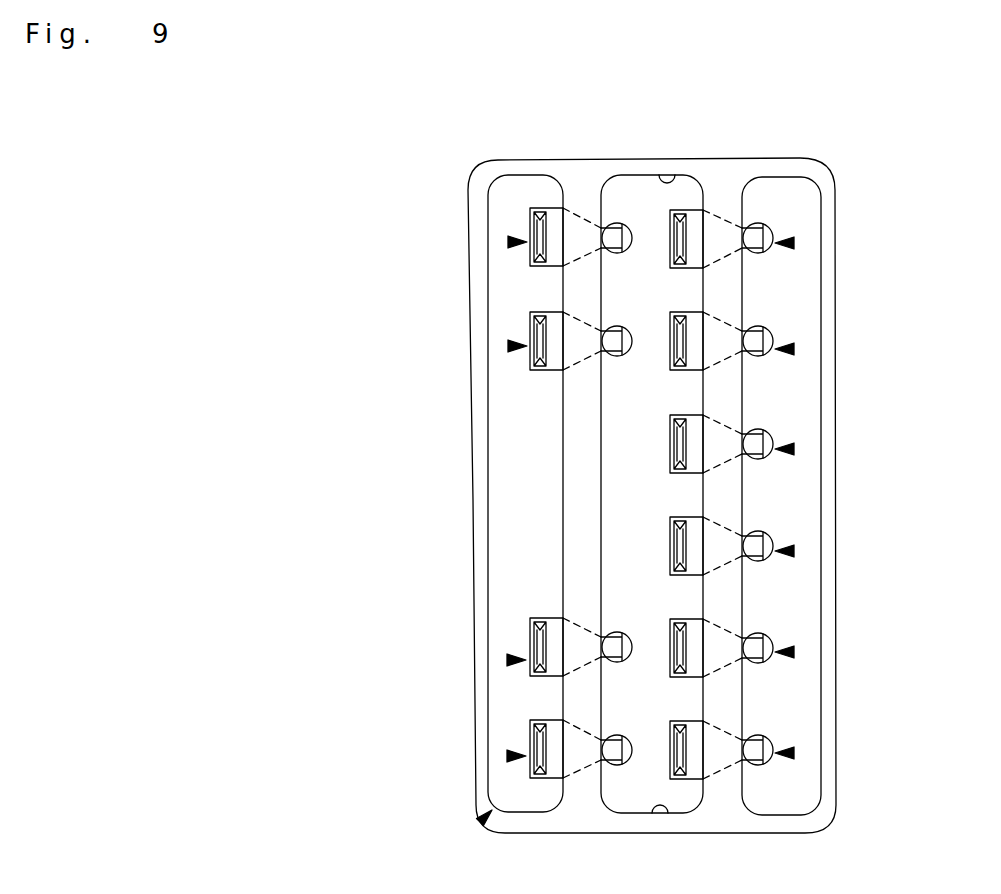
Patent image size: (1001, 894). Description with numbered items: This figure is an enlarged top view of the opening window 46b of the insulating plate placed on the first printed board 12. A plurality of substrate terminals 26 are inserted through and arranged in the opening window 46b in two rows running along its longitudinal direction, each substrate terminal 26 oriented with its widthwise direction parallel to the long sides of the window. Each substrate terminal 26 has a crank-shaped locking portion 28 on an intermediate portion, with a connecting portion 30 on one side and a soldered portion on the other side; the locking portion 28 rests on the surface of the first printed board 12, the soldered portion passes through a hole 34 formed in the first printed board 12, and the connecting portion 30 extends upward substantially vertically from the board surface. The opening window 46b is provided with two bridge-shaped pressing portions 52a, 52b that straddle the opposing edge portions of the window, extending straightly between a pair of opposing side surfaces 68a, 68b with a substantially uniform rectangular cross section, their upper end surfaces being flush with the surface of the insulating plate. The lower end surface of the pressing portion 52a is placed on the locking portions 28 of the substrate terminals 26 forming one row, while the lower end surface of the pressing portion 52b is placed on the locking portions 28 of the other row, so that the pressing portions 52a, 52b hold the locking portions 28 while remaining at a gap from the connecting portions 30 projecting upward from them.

The first printed board 12 is at (518, 490).
The substrate terminal 26 is at (508, 242).
The locking portion 28 is at (577, 235).
The connecting portion 30 is at (538, 212).
The hole 34 is at (618, 224).
The opening window 46b is at (484, 818).
The pressing portion 52a is at (730, 683).
The pressing portion 52b is at (575, 540).
The side surface 68a is at (660, 170).
The side surface 68b is at (657, 820).